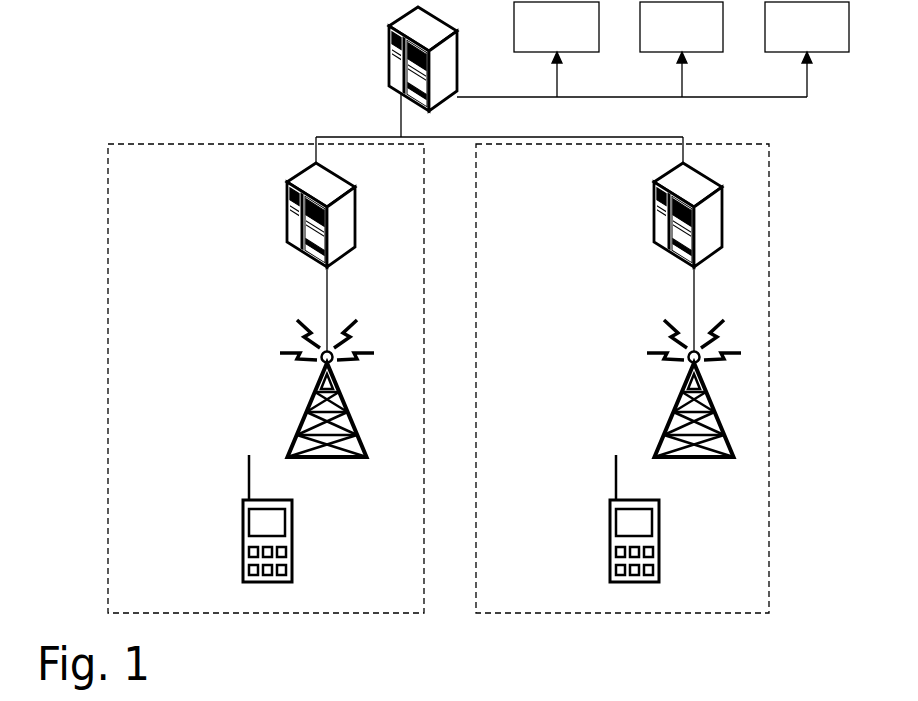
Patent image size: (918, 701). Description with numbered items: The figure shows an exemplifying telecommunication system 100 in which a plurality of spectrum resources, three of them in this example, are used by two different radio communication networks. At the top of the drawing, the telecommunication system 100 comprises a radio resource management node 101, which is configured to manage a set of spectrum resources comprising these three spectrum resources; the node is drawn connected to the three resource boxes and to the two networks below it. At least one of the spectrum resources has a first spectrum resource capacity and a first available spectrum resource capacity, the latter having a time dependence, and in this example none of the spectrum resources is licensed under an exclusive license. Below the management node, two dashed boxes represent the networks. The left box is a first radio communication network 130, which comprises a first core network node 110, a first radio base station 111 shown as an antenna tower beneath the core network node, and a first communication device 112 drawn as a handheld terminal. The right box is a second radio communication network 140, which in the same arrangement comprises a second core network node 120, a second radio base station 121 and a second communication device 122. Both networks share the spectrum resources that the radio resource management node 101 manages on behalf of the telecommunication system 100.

The telecommunication system 100 is at (158, 78).
The radio resource management node 101 is at (359, 59).
The first core network node 110 is at (258, 202).
The first radio base station 111 is at (283, 362).
The first communication device 112 is at (208, 518).
The second core network node 120 is at (626, 202).
The second radio base station 121 is at (650, 362).
The second communication device 122 is at (576, 518).
The first radio communication network 130 is at (238, 378).
The second radio communication network 140 is at (650, 378).